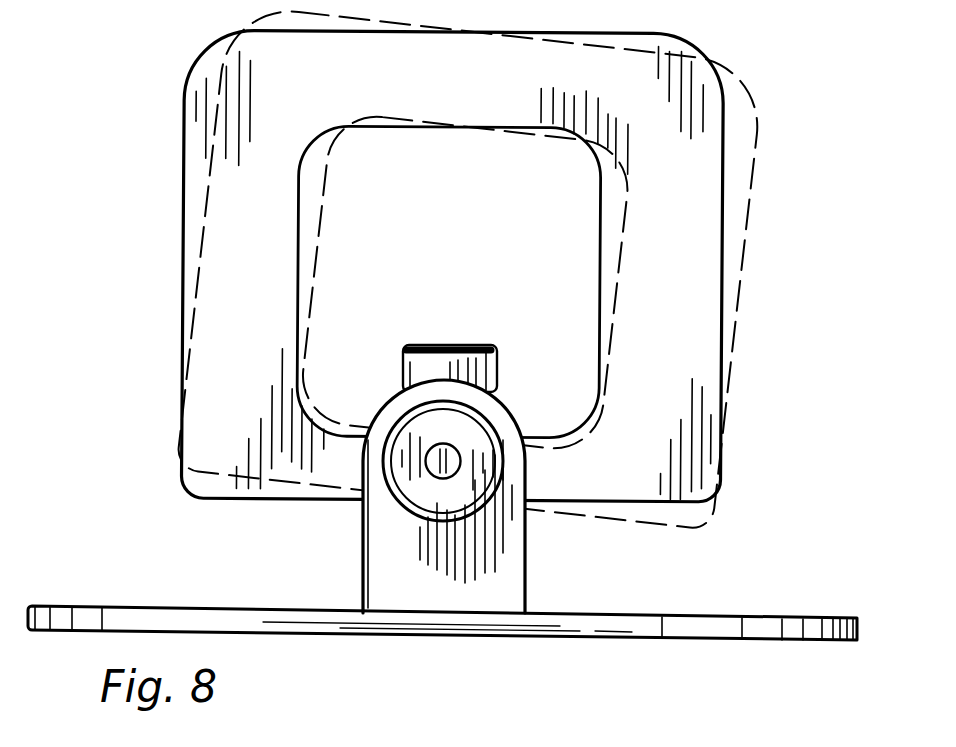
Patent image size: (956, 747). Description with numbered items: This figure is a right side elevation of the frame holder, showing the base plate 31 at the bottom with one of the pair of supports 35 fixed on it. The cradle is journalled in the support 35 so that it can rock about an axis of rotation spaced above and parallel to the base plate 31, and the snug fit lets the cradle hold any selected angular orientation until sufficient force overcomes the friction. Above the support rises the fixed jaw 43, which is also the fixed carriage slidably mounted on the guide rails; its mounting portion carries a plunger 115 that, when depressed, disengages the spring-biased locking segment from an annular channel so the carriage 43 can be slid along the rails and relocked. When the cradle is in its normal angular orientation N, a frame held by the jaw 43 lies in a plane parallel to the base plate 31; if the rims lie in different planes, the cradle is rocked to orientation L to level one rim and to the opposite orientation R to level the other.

The base plate 31 is at (710, 628).
The support 35 is at (500, 579).
The fixed jaw 43 is at (692, 333).
The plunger 115 is at (470, 342).
The angular orientation R is at (443, 470).
The normal angular orientation N is at (443, 423).
The angular orientation L is at (444, 470).